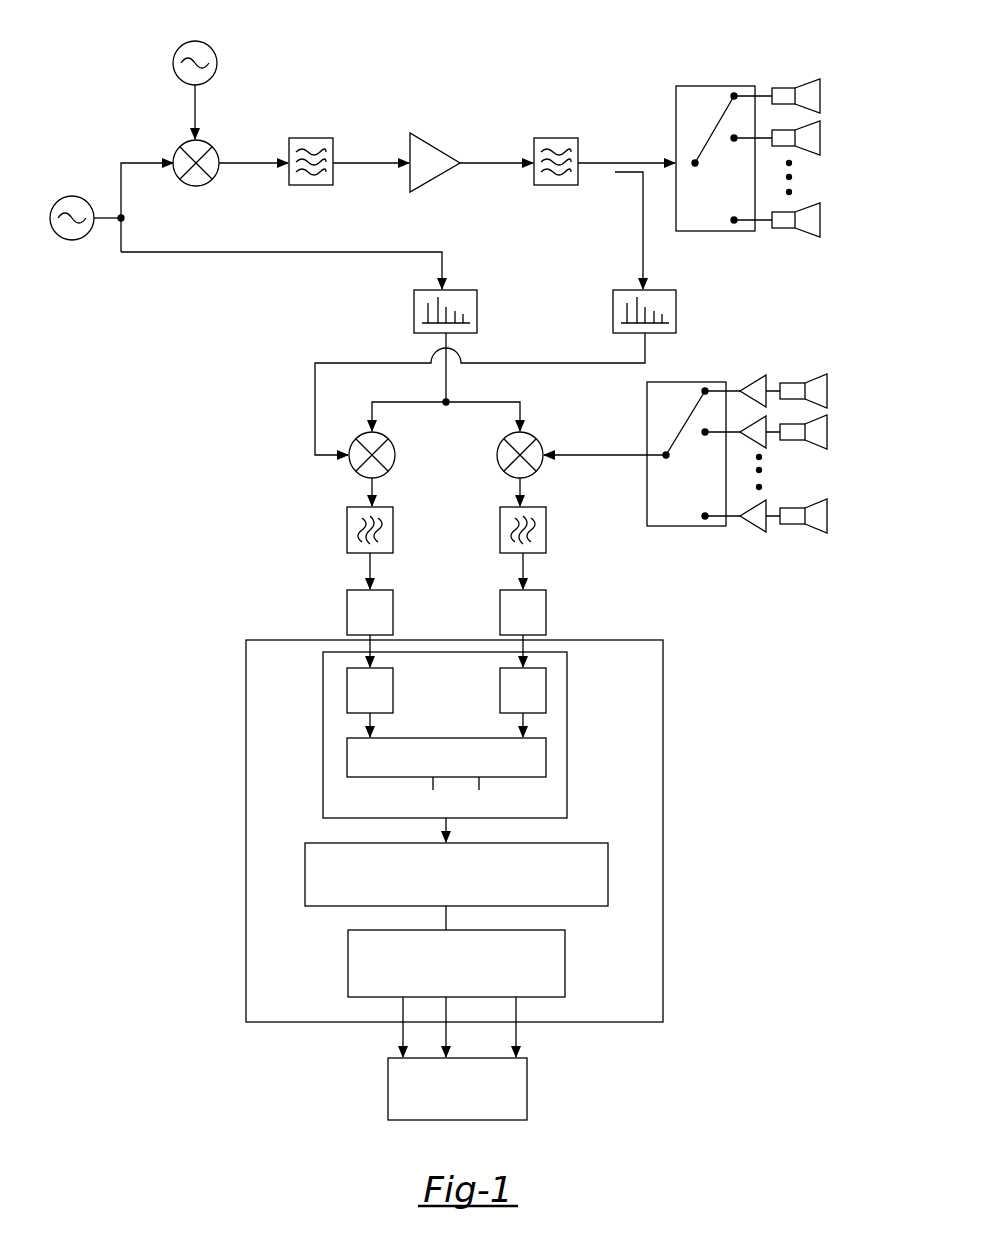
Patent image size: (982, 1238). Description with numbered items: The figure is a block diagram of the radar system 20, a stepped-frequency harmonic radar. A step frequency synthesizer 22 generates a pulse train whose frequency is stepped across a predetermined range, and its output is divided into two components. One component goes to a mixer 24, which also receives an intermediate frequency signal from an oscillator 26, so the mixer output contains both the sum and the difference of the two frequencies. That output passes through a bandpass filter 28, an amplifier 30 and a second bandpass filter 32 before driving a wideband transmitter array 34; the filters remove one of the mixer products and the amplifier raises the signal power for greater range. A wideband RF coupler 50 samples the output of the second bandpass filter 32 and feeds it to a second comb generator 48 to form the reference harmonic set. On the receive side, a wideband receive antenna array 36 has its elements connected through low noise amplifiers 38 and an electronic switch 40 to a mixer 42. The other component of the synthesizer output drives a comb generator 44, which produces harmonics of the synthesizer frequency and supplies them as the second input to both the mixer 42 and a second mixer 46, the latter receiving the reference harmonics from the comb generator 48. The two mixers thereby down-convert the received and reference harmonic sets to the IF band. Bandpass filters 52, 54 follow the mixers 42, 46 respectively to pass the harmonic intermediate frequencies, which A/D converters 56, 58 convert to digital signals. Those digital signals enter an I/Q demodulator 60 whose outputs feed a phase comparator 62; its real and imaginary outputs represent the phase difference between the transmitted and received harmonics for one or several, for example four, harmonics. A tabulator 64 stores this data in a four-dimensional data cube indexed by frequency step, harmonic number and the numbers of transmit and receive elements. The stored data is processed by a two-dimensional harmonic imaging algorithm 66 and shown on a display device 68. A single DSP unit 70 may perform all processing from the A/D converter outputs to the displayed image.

The radar system 20 is at (512, 78).
The step frequency synthesizer 22 is at (65, 193).
The mixer 24 is at (212, 148).
The oscillator 26 is at (218, 55).
The bandpass filter 28 is at (317, 138).
The amplifier 30 is at (425, 133).
The second bandpass filter 32 is at (557, 138).
The wideband transmitter array 34 is at (801, 76).
The wideband receive antenna array 36 is at (820, 370).
The low noise amplifiers 38 is at (752, 532).
The electronic switch 40 is at (698, 382).
The mixer 42 is at (545, 432).
The comb generator 44 is at (461, 290).
The second mixer 46 is at (350, 430).
The second comb generator 48 is at (661, 290).
The signal tap line 50 is at (617, 178).
The bandpass filter 52 is at (546, 525).
The bandpass filter 54 is at (347, 525).
The A/D converter 56 is at (546, 607).
The A/D converter 58 is at (347, 607).
The I/Q demodulator 60 is at (347, 687).
The phase comparator 62 is at (546, 755).
The tabulator 64 is at (305, 845).
The two-dimensional harmonic imaging algorithm 66 is at (565, 962).
The display device 68 is at (527, 1087).
The DSP unit 70 is at (663, 884).